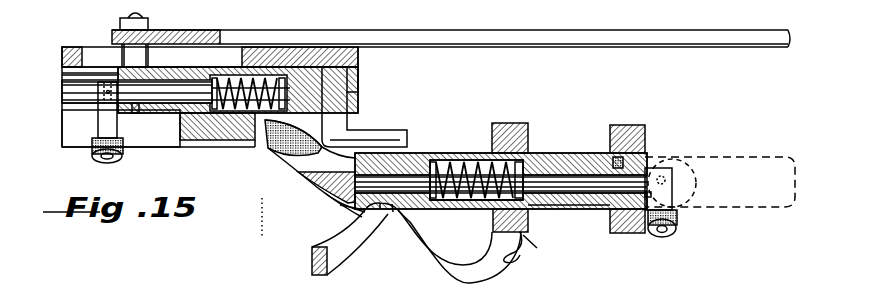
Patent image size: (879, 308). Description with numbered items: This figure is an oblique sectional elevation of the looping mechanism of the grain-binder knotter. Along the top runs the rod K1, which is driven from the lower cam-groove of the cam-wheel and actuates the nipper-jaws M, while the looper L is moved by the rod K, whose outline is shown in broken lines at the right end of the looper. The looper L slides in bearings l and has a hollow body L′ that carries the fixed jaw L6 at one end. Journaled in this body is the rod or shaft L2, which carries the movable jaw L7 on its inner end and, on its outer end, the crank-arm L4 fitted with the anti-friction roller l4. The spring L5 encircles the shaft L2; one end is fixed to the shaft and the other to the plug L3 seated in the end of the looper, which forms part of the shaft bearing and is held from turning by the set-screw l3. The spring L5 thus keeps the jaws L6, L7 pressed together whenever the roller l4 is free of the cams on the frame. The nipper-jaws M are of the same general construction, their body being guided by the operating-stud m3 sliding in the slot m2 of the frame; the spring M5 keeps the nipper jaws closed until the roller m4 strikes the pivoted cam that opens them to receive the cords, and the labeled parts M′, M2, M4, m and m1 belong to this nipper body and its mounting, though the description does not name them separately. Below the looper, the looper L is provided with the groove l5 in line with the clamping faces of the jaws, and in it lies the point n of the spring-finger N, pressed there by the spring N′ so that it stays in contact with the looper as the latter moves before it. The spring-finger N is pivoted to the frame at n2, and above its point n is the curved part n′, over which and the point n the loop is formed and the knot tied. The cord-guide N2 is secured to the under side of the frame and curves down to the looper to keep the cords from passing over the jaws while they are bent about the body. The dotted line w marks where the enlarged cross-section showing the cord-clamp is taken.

The rod K1 is at (550, 66).
The rod K is at (760, 191).
The looper L is at (580, 149).
The hollow body of the looper L′ is at (438, 160).
The rod or shaft L2 is at (578, 210).
The plug L3 is at (556, 210).
The crank-arm L4 is at (673, 205).
The spring L5 is at (457, 204).
The fixed jaw L6 is at (278, 152).
The movable jaw L7 is at (312, 182).
The bearings l is at (518, 118).
The set-screw l3 is at (615, 160).
The anti-friction roller l4 is at (690, 249).
The groove l5 is at (340, 208).
The nipper-jaws M is at (372, 110).
The bracket foot M′ is at (385, 146).
The body M2 is at (165, 92).
The tube M4 is at (98, 122).
The spring M5 is at (220, 148).
The notch m is at (376, 68).
The spring rod m1 is at (134, 108).
The slot m2 is at (212, 63).
The operating-stud m3 is at (134, 40).
The roller m4 is at (134, 178).
The spring-finger N is at (470, 294).
The spring N′ is at (520, 273).
The cord-guide N2 is at (350, 285).
The point of the spring-finger n is at (385, 207).
The curved part n′ is at (393, 218).
The pivot n2 is at (558, 263).
The section line w is at (262, 225).